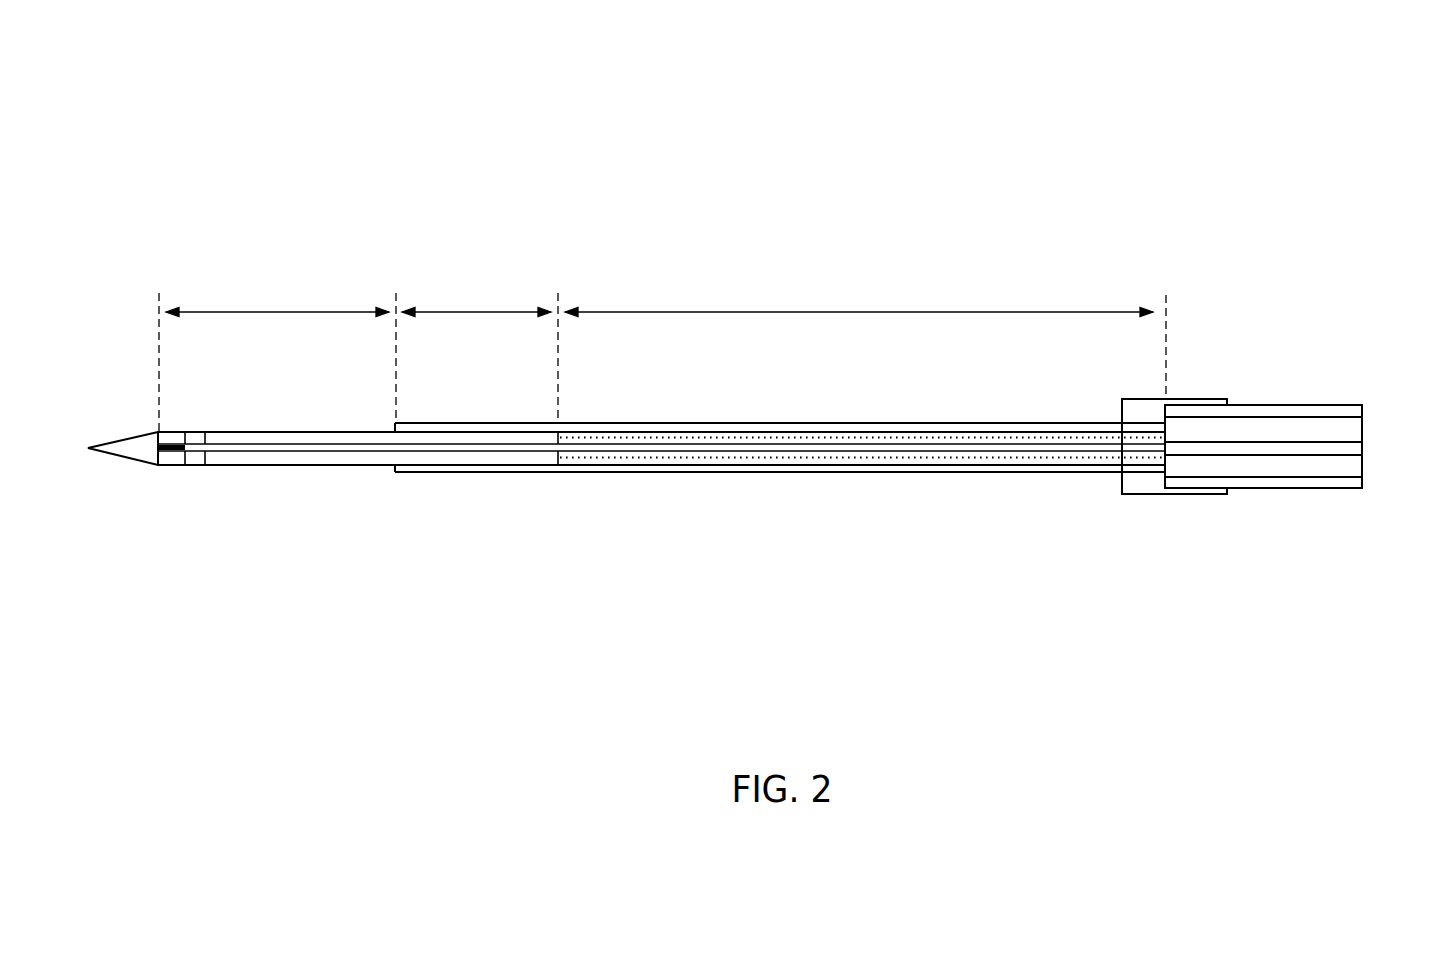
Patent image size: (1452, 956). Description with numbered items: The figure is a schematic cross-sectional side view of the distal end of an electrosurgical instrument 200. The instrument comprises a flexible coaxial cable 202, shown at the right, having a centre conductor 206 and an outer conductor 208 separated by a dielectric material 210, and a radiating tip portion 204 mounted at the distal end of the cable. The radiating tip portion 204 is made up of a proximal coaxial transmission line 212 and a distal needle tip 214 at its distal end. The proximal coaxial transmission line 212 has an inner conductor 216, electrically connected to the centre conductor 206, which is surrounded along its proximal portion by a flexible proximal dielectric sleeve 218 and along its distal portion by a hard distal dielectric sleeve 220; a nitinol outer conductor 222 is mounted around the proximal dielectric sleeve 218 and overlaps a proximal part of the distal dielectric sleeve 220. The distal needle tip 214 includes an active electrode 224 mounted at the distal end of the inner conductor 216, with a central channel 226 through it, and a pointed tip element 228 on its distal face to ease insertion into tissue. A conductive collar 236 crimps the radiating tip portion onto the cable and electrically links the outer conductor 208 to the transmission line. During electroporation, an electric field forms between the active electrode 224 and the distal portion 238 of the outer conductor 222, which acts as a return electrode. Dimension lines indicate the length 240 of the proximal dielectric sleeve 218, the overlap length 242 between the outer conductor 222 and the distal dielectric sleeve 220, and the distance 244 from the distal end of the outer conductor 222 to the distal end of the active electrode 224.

The electrosurgical instrument 200 is at (1214, 144).
The coaxial cable 202 is at (1286, 445).
The radiating tip portion 204 is at (627, 548).
The centre conductor 206 is at (1290, 455).
The outer conductor 208 is at (1249, 489).
The dielectric material 210 is at (1362, 465).
The proximal coaxial transmission line 212 is at (780, 527).
The distal needle tip 214 is at (626, 496).
The inner conductor 216 is at (862, 496).
The proximal dielectric sleeve 218 is at (905, 458).
The distal dielectric sleeve 220 is at (338, 466).
The outer conductor 222 is at (630, 474).
The active electrode 224 is at (201, 493).
The central channel 226 is at (190, 431).
The pointed tip element 228 is at (135, 465).
The collar 236 is at (1183, 399).
The distal portion of the outer conductor 238 is at (405, 474).
The length of the proximal dielectric sleeve 240 is at (855, 307).
The overlap length 242 is at (482, 307).
The distance from outer conductor distal end to active electrode distal end 244 is at (277, 307).